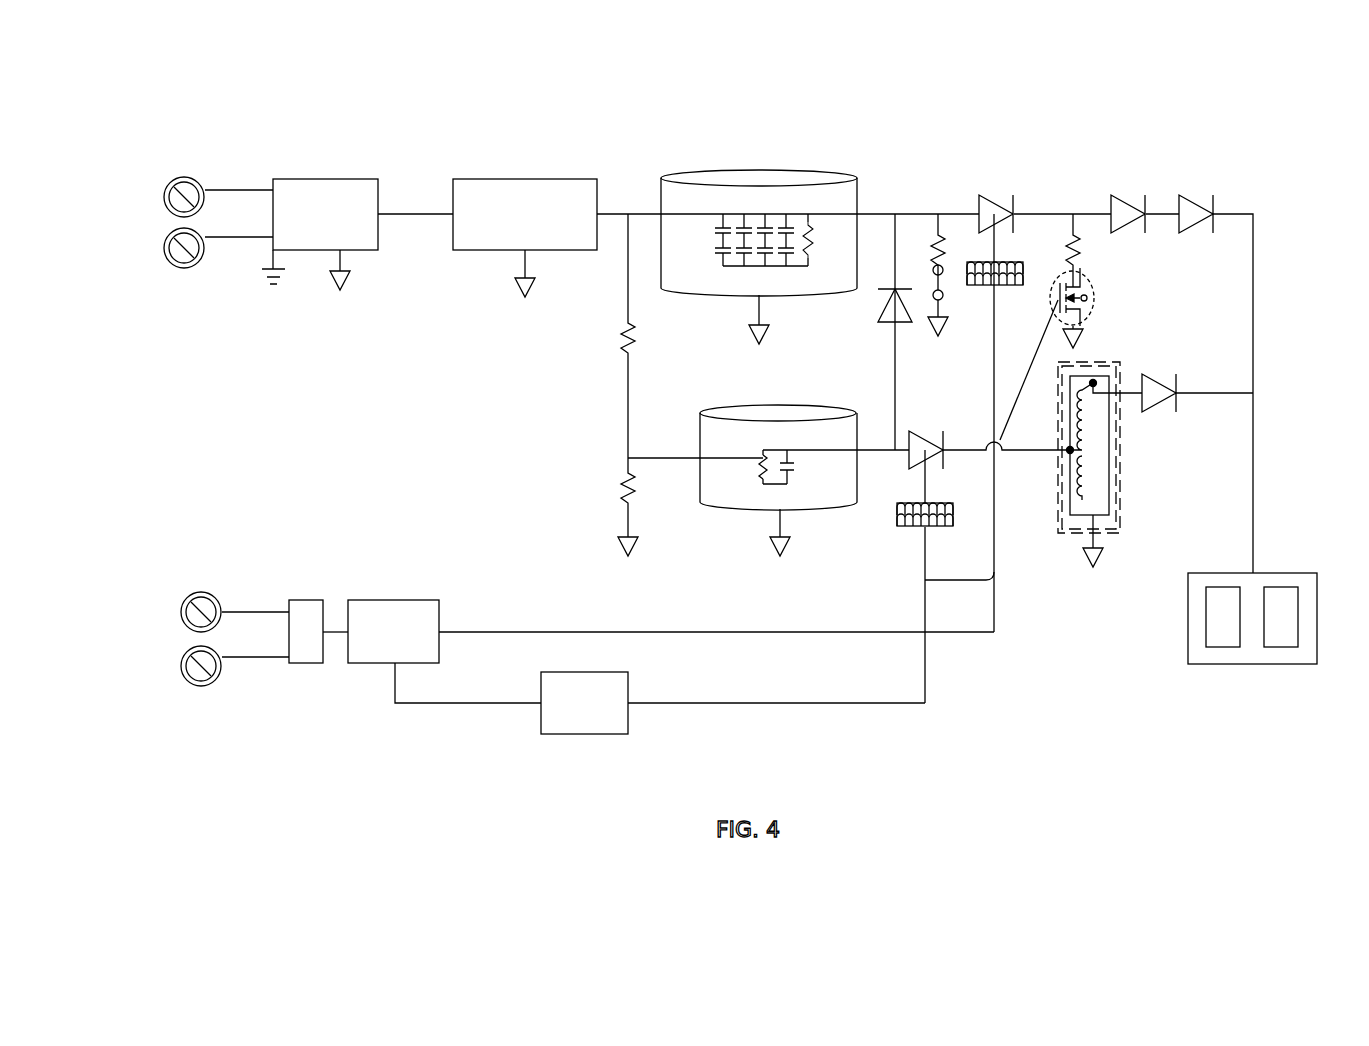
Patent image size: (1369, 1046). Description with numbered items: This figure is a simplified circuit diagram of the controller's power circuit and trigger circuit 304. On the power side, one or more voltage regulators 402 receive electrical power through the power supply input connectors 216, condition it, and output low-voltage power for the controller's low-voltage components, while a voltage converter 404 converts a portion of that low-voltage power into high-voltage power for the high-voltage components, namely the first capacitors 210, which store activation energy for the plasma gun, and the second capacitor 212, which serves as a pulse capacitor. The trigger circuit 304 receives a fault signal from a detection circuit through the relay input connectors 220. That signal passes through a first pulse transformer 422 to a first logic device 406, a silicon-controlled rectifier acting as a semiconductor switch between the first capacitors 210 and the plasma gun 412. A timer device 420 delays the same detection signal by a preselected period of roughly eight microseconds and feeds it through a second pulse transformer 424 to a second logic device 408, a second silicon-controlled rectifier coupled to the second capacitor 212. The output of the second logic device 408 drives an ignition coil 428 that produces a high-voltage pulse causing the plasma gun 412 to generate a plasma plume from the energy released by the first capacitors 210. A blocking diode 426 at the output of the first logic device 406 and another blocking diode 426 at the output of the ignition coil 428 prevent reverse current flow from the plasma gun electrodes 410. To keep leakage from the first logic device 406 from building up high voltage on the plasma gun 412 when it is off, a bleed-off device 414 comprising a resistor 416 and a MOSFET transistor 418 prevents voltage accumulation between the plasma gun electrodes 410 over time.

The trigger circuit 304 is at (1147, 105).
The power supply input connectors 216 is at (152, 225).
The relay input connectors 220 is at (166, 645).
The voltage regulators 402 is at (316, 178).
The voltage converter 404 is at (527, 178).
The first capacitors 210 is at (768, 172).
The second capacitor 212 is at (758, 407).
The first logic device 406 is at (990, 195).
The second logic device 408 is at (918, 430).
The plasma gun electrodes 410 is at (1220, 647).
The plasma gun 412 is at (1275, 573).
The bleed-off device 414 is at (1048, 247).
The resistor 416 is at (1083, 253).
The transistor 418 is at (1095, 302).
The timer device 420 is at (628, 682).
The first pulse transformer 422 is at (970, 262).
The second pulse transformer 424 is at (897, 521).
The blocking diode 426 is at (1190, 195).
The ignition coil 428 is at (1120, 480).